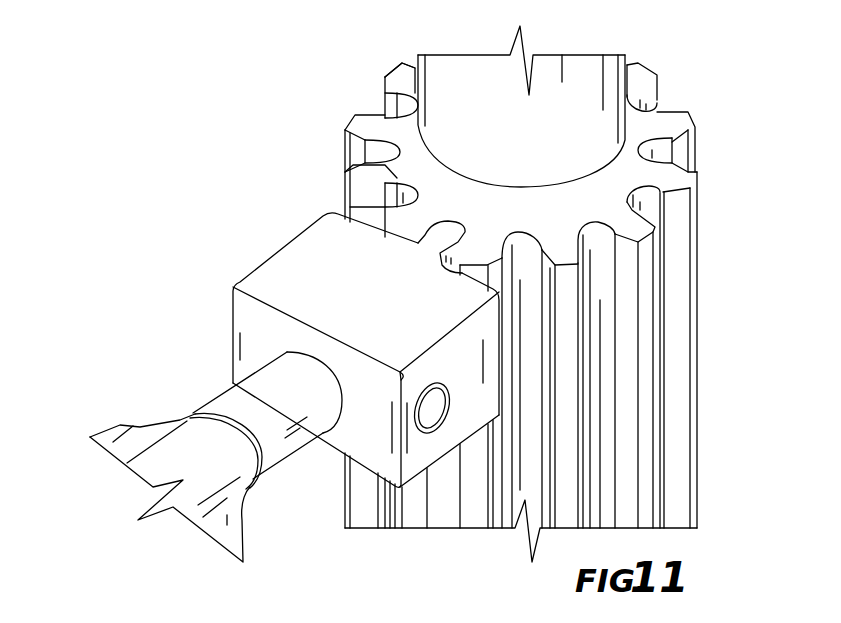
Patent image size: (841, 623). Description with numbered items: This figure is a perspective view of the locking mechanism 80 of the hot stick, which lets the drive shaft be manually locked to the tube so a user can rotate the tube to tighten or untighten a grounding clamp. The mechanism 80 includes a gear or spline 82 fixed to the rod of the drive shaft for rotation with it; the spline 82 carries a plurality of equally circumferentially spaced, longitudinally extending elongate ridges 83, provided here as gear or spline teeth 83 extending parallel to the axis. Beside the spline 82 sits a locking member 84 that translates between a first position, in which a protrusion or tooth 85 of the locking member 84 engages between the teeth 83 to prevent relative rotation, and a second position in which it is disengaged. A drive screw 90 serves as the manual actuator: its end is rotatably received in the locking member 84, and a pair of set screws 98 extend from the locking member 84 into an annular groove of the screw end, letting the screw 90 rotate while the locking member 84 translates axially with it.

The locking mechanism 80 is at (258, 389).
The gear or spline 82 is at (698, 414).
The elongate ridges 83 is at (397, 180).
The locking member 84 is at (331, 382).
The protrusion or tooth 85 is at (443, 234).
The drive screw 90 is at (112, 445).
The set screws 98 is at (432, 410).